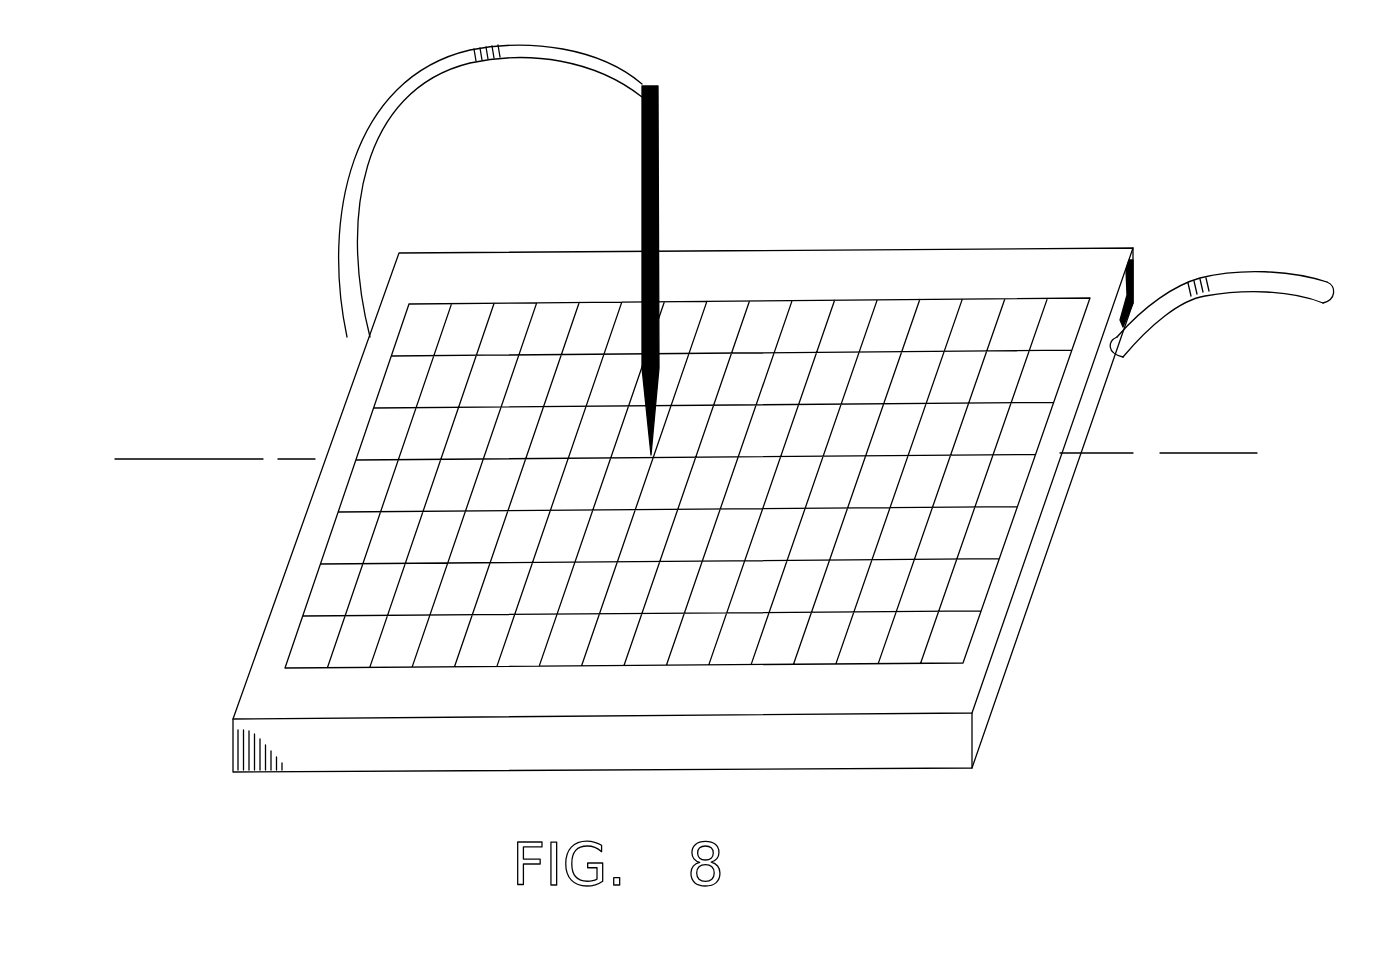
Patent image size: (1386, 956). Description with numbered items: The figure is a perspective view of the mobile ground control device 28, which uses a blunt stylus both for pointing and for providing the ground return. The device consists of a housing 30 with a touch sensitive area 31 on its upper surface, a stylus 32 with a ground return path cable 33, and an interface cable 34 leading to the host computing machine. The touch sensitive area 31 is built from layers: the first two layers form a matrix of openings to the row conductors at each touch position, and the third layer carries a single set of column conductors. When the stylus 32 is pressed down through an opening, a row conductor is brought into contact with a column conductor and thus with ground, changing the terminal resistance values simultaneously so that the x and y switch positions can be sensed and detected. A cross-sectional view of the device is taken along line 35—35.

The mobile ground control device 28 is at (619, 529).
The housing 30 is at (1027, 622).
The touch sensitive area 31 is at (368, 595).
The stylus 32 is at (663, 198).
The ground return path cable 33 is at (390, 98).
The interface cable 34 is at (1220, 273).
The section line 35 is at (189, 435).